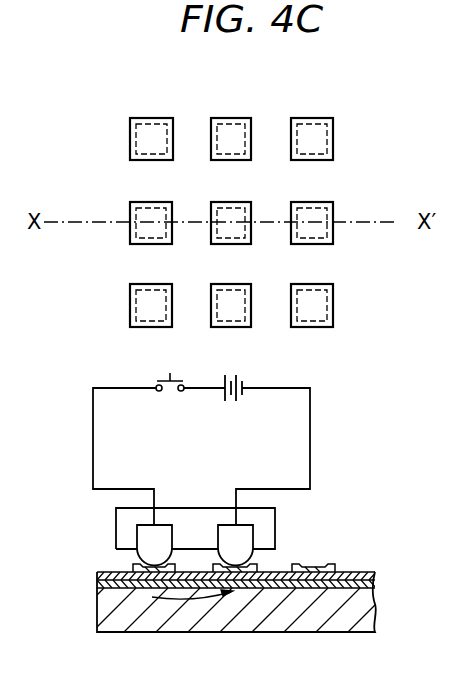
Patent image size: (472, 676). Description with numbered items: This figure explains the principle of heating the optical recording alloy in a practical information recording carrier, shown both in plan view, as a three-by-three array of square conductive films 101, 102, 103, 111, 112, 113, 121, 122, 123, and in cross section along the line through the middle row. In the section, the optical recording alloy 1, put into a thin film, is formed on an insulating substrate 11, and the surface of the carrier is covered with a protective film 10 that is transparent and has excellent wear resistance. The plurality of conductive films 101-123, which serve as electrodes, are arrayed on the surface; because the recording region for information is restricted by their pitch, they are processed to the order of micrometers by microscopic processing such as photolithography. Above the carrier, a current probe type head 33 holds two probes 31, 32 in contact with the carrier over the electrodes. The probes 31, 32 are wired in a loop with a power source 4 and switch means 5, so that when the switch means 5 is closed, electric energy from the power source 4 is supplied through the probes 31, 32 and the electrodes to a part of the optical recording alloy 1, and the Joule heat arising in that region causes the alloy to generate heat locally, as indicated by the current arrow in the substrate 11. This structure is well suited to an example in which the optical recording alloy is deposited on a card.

The conductive film 101 is at (323, 118).
The conductive film 102 is at (306, 202).
The conductive film 103 is at (309, 284).
The conductive film 111 is at (233, 118).
The conductive film 112 is at (223, 202).
The conductive film 113 is at (225, 284).
The conductive film 121 is at (160, 118).
The conductive film 122 is at (141, 202).
The conductive film 123 is at (143, 284).
The optical recording alloy 1 is at (375, 580).
The protective film 10 is at (375, 572).
The insulating substrate 11 is at (378, 616).
The power source 4 is at (230, 403).
The switch means 5 is at (168, 396).
The probe 31 is at (137, 540).
The probe 32 is at (253, 538).
The current probe type head 33 is at (275, 516).